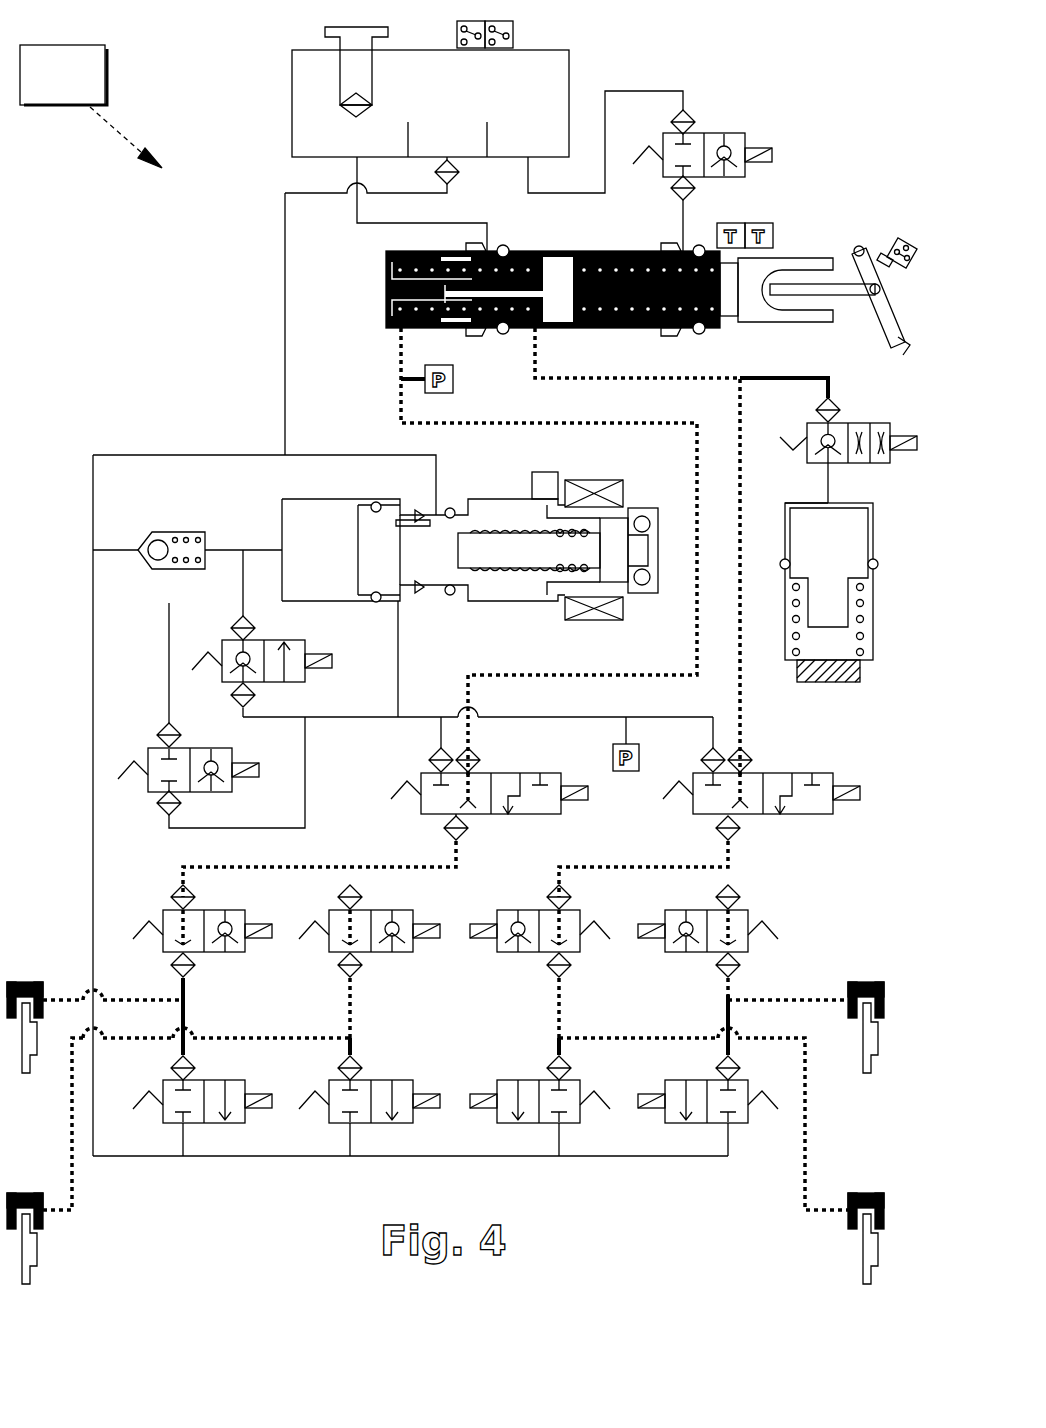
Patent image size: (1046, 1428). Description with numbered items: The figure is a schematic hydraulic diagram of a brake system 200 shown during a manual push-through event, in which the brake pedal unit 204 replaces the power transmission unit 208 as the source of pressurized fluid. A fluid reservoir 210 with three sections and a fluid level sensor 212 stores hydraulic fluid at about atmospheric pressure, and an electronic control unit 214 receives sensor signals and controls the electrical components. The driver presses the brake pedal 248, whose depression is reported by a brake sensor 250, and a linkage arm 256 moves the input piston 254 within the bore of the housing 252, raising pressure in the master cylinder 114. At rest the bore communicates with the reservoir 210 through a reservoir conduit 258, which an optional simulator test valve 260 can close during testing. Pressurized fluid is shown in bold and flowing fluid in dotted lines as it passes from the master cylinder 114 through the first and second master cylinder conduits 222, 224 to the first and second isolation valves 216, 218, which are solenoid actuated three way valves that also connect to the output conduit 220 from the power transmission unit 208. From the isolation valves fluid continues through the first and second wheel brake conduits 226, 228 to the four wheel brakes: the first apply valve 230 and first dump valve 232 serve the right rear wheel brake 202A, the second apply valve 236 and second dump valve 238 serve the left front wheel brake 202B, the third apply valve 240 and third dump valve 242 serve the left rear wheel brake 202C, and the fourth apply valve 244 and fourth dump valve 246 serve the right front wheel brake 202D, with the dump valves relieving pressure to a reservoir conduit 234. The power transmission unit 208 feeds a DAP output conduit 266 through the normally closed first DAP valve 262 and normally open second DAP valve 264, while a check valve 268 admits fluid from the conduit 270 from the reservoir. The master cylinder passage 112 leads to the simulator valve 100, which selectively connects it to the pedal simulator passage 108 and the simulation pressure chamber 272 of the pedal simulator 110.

The simulator valve 100 is at (858, 423).
The pedal simulator passage 108 is at (832, 482).
The pedal simulator 110 is at (839, 577).
The master cylinder passage 112 is at (803, 372).
The master cylinder 114 is at (610, 328).
The brake system 200 is at (108, 172).
The right rear wheel brake 202A is at (45, 992).
The left front wheel brake 202B is at (45, 1195).
The left rear wheel brake 202C is at (850, 990).
The right front wheel brake 202D is at (850, 1200).
The brake pedal unit 204 is at (849, 237).
The power transmission unit 208 is at (517, 470).
The fluid reservoir 210 is at (262, 112).
The fluid level sensor 212 is at (515, 12).
The electronic control unit 214 is at (100, 46).
The first isolation valve 216 is at (540, 814).
The second isolation valve 218 is at (812, 814).
The output conduit 220 is at (505, 719).
The first master cylinder conduit 222 is at (700, 640).
The second master cylinder conduit 224 is at (740, 700).
The first wheel brake conduit 226 is at (398, 866).
The second wheel brake conduit 228 is at (690, 866).
The first apply valve 230 is at (215, 910).
The first dump valve 232 is at (215, 1080).
The reservoir conduit 234 is at (93, 760).
The second apply valve 236 is at (380, 910).
The second dump valve 238 is at (380, 1080).
The third apply valve 240 is at (742, 910).
The third dump valve 242 is at (736, 1125).
The fourth apply valve 244 is at (535, 910).
The fourth dump valve 246 is at (530, 1080).
The brake pedal 248 is at (884, 312).
The brake sensor 250 is at (903, 227).
The housing 252 is at (562, 290).
The input piston 254 is at (757, 272).
The linkage arm 256 is at (848, 282).
The reservoir conduit 258 is at (683, 222).
The simulator test valve 260 is at (712, 133).
The first DAP valve 262 is at (288, 640).
The second DAP valve 264 is at (222, 748).
The DAP output conduit 266 is at (262, 550).
The check valve 268 is at (175, 532).
The conduit 270 is at (285, 355).
The simulation pressure chamber 272 is at (805, 503).